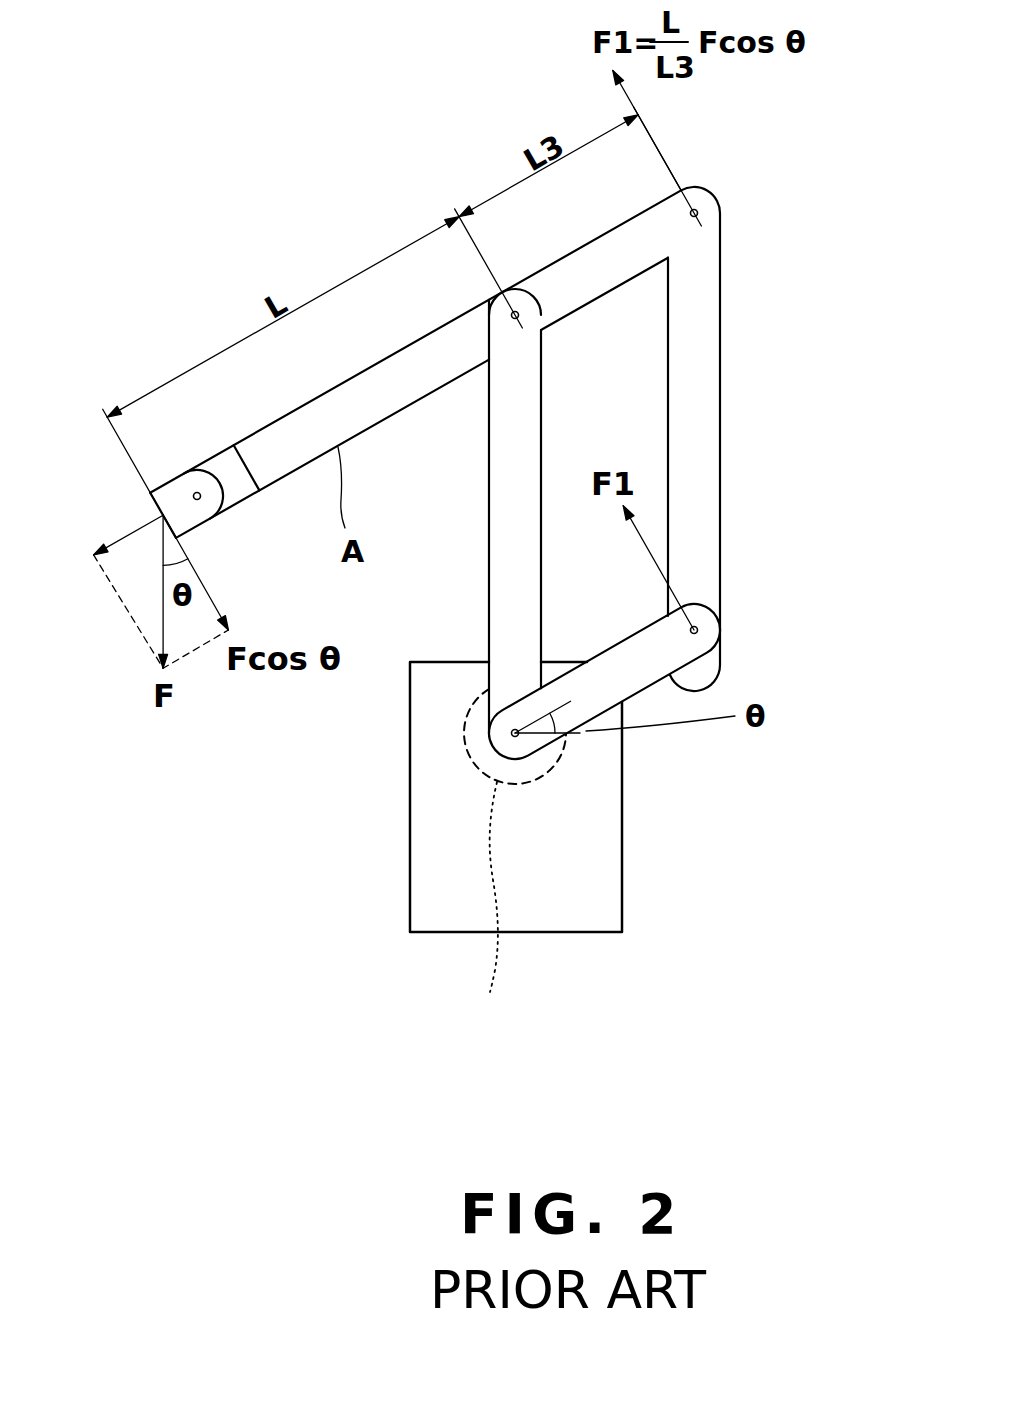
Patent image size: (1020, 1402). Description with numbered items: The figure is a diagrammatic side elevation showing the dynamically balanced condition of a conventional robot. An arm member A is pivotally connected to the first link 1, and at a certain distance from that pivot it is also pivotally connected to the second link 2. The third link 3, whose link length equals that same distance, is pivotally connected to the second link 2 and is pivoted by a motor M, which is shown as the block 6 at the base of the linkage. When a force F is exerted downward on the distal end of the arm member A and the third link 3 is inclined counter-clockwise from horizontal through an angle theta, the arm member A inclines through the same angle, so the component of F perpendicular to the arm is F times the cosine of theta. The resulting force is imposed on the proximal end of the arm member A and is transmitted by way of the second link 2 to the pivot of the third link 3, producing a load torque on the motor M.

The first link 1 is at (488, 508).
The second link 2 is at (720, 437).
The third link 3 is at (735, 664).
The motor 6 is at (622, 852).